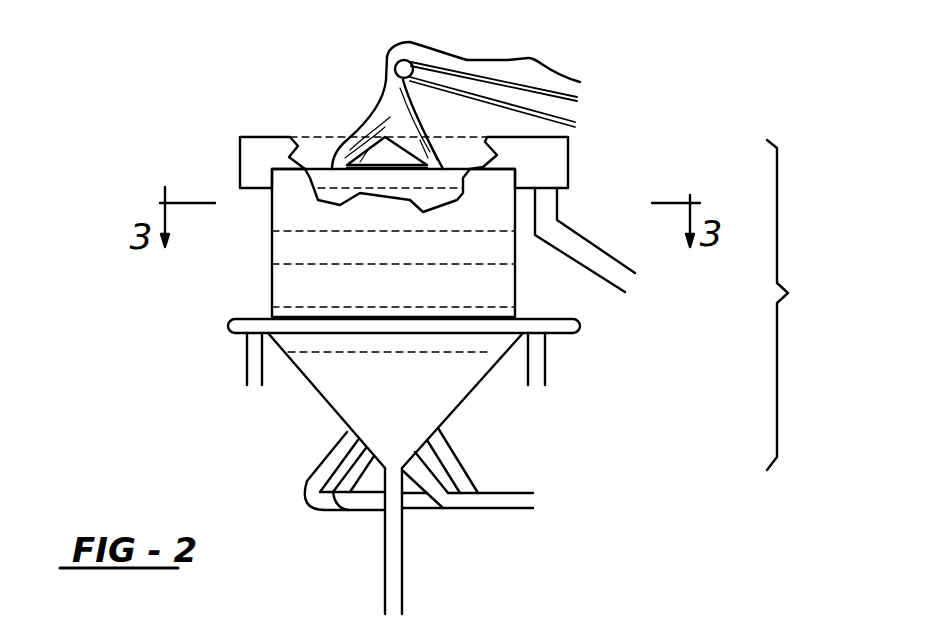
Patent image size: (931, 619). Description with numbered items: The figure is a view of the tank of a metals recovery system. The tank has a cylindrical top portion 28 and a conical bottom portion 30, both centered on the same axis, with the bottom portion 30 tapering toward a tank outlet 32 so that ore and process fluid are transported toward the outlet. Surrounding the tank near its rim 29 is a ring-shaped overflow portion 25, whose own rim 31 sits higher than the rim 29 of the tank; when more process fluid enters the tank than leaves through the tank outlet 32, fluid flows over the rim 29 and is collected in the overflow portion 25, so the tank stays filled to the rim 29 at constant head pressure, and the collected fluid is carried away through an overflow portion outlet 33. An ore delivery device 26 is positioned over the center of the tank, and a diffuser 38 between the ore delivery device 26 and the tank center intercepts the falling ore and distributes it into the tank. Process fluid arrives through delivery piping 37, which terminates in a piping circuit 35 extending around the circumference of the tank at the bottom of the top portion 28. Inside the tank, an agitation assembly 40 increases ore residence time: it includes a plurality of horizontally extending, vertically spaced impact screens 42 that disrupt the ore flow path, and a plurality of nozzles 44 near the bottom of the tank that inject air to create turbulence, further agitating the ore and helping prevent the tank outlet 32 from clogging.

The overflow portion 25 is at (568, 162).
The ore delivery device 26 is at (515, 100).
The top portion 28 is at (272, 205).
The rim 29 is at (313, 186).
The bottom portion 30 is at (470, 393).
The rim of the overflow portion 31 is at (248, 136).
The tank outlet 32 is at (385, 470).
The overflow portion outlet 33 is at (577, 232).
The piping circuit 35 is at (488, 322).
The delivery piping 37 is at (250, 360).
The diffuser 38 is at (384, 153).
The agitation assembly 40 is at (793, 305).
The impact screens 42 is at (298, 232).
The nozzles 44 is at (325, 452).